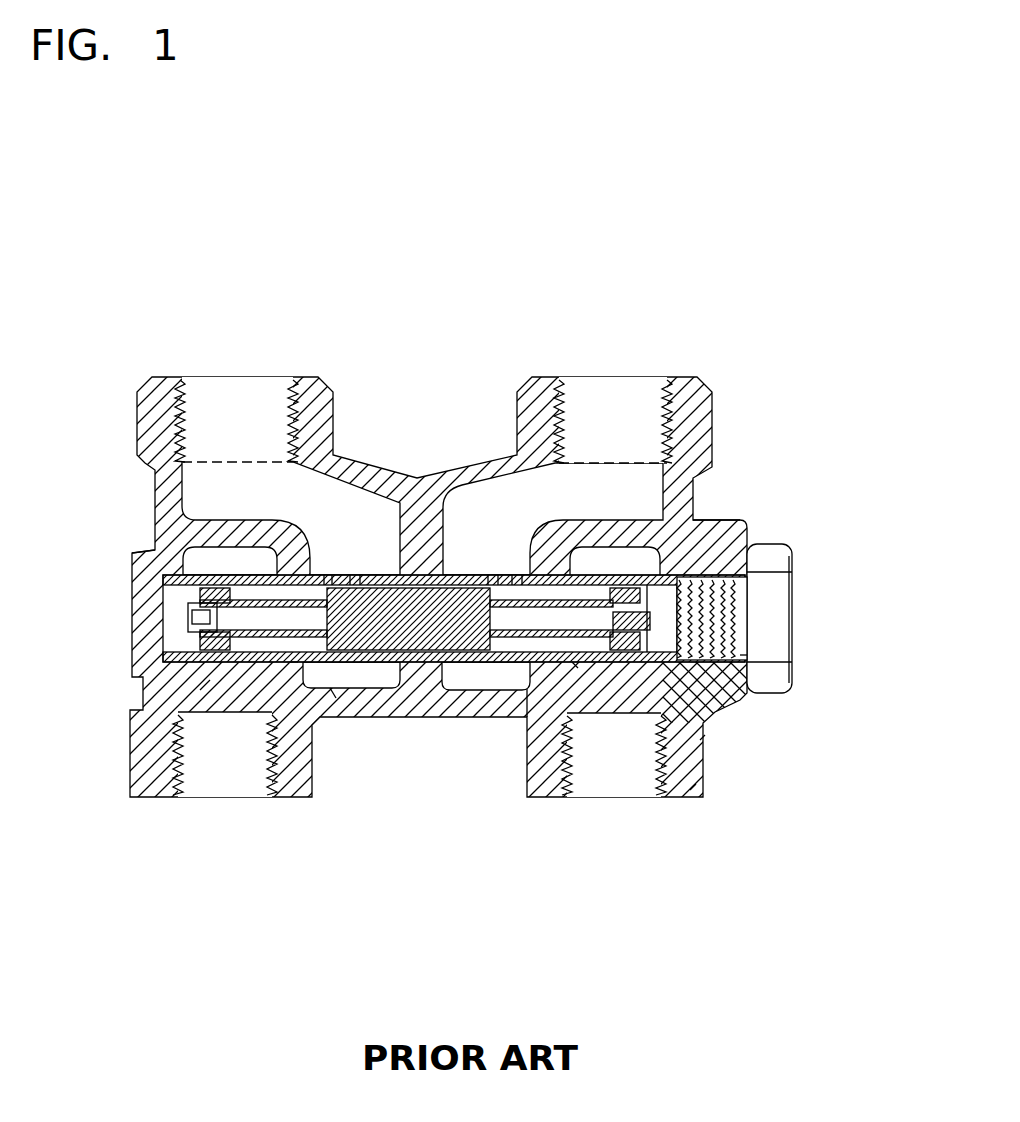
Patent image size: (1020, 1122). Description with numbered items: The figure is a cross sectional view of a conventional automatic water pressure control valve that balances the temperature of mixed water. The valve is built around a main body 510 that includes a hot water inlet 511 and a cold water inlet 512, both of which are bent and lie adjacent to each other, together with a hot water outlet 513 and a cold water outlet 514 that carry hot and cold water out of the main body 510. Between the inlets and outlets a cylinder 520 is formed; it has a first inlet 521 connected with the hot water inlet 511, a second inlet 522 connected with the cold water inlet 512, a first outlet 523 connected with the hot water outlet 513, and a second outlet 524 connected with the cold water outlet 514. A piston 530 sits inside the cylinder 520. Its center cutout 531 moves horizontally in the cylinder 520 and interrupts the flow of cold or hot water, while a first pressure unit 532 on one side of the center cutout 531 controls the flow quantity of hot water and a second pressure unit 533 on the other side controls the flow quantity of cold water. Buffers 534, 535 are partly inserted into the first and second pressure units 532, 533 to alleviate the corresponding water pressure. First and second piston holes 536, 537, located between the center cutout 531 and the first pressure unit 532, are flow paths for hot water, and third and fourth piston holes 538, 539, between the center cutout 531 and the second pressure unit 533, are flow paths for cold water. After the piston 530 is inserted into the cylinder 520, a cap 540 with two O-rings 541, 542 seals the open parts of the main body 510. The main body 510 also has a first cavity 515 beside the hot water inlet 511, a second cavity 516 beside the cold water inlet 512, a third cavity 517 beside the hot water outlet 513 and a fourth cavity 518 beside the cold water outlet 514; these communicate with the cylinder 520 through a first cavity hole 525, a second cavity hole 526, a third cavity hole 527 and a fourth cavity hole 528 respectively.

The main body 510 is at (140, 436).
The hot water inlet 511 is at (230, 395).
The cold water inlet 512 is at (640, 395).
The hot water outlet 513 is at (207, 757).
The cold water outlet 514 is at (637, 770).
The first cavity 515 is at (140, 552).
The second cavity 516 is at (738, 512).
The third cavity 517 is at (373, 678).
The fourth cavity 518 is at (510, 678).
The cylinder 520 is at (180, 623).
The first inlet 521 is at (355, 577).
The second inlet 522 is at (493, 577).
The first outlet 523 is at (207, 683).
The second outlet 524 is at (703, 737).
The first cavity hole 525 is at (192, 560).
The second cavity hole 526 is at (612, 573).
The third cavity hole 527 is at (333, 690).
The fourth cavity hole 528 is at (575, 665).
The piston 530 is at (405, 652).
The center cutout 531 is at (457, 640).
The first pressure unit 532 is at (195, 597).
The second pressure unit 533 is at (613, 637).
The buffer 534 is at (185, 630).
The buffer 535 is at (740, 655).
The first piston hole 536 is at (328, 577).
The second piston hole 537 is at (296, 665).
The third piston hole 538 is at (517, 577).
The fourth piston hole 539 is at (693, 787).
The cap 540 is at (767, 557).
The O-ring 541 is at (700, 593).
The O-ring 542 is at (700, 605).